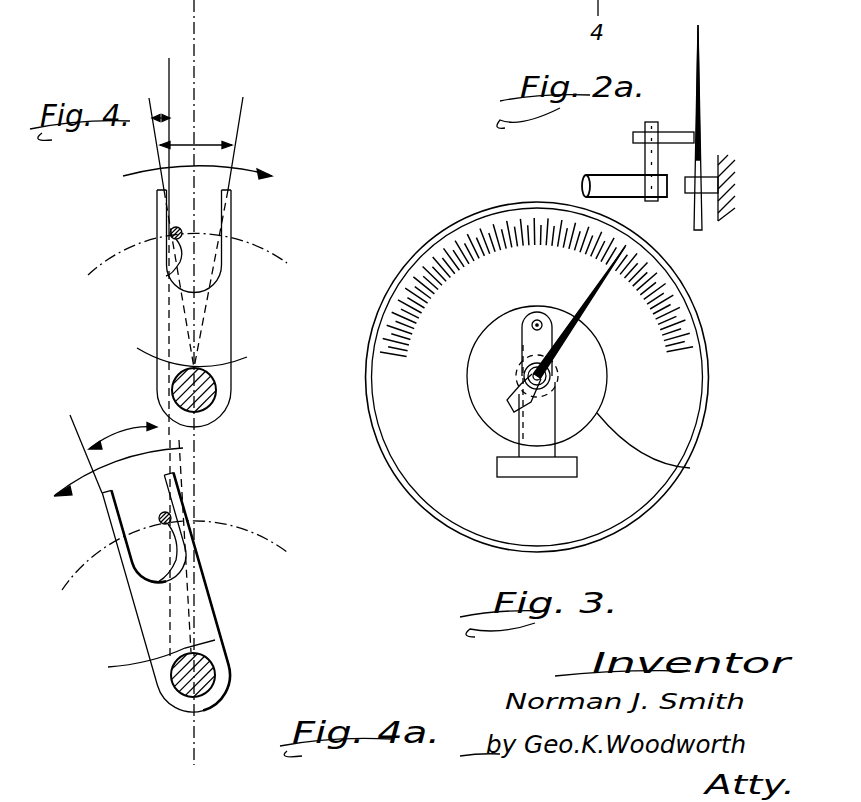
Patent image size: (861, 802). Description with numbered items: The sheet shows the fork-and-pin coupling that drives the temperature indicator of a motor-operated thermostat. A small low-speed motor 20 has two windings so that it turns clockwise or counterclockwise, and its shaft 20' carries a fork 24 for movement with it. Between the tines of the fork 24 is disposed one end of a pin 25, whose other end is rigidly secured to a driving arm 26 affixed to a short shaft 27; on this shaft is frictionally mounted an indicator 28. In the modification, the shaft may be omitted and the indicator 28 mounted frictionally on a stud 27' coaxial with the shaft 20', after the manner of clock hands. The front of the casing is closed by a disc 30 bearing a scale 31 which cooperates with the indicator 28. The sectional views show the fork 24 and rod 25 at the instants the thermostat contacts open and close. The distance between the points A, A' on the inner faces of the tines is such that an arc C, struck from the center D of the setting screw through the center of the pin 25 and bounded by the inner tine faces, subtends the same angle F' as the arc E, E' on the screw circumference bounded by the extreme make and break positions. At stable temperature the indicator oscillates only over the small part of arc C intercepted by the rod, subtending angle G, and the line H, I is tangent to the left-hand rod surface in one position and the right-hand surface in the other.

In FIG. 3, the motor 20 is at (564, 377).
In FIG. 4, the shaft 20' is at (243, 390).
In FIG. 4A, the shaft 20' is at (243, 675).
In FIG. 2A, the shaft 20' is at (613, 169).
In FIG. 4, the fork 24 is at (218, 320).
In FIG. 4A, the fork 24 is at (203, 600).
In FIG. 2A, the fork 24 is at (648, 125).
In FIG. 4, the pin 25 is at (172, 246).
In FIG. 4A, the pin 25 is at (171, 516).
In FIG. 2A, the pin 25 is at (671, 132).
In FIG. 3, the pin 25 is at (541, 322).
In FIG. 3, the driving arm 26 is at (530, 341).
In FIG. 3, the shaft 27 is at (578, 411).
In FIG. 2A, the stud 27' is at (709, 213).
In FIG. 2A, the indicator 28 is at (701, 97).
In FIG. 3, the indicator 28 is at (590, 305).
In FIG. 3, the disc 30 is at (677, 400).
In FIG. 3, the scale 31 is at (675, 347).
In FIG. 4, the contact point A is at (126, 215).
In FIG. 4A, the contact point A is at (81, 532).
In FIG. 4, the contact point A' is at (263, 215).
In FIG. 4A, the contact point A' is at (216, 500).
In FIG. 4, the arc C is at (262, 258).
In FIG. 4A, the arc C is at (263, 532).
In FIG. 4, the center D is at (212, 398).
In FIG. 4A, the center D is at (210, 688).
In FIG. 4, the arc endpoint E is at (175, 352).
In FIG. 4A, the arc endpoint E is at (139, 666).
In FIG. 4, the arc endpoint E' is at (246, 360).
In FIG. 4A, the arc endpoint E' is at (236, 636).
In FIG. 4, the angle F' is at (197, 232).
In FIG. 4A, the angle F' is at (118, 460).
In FIG. 4, the angle G is at (157, 116).
In FIG. 4, the tangent line H is at (169, 70).
In FIG. 4A, the tangent line I is at (172, 612).